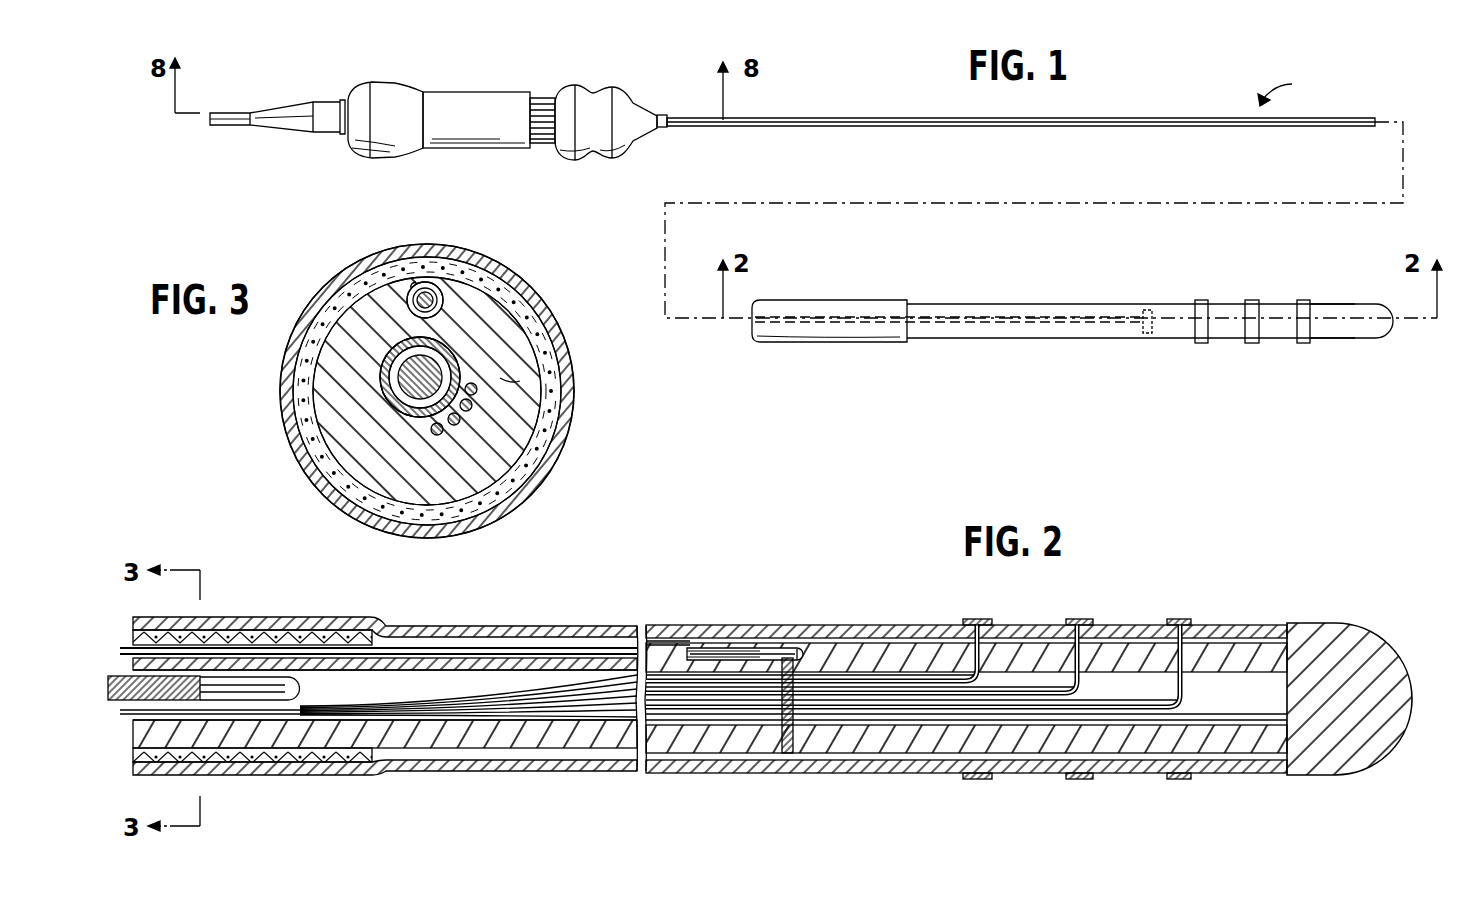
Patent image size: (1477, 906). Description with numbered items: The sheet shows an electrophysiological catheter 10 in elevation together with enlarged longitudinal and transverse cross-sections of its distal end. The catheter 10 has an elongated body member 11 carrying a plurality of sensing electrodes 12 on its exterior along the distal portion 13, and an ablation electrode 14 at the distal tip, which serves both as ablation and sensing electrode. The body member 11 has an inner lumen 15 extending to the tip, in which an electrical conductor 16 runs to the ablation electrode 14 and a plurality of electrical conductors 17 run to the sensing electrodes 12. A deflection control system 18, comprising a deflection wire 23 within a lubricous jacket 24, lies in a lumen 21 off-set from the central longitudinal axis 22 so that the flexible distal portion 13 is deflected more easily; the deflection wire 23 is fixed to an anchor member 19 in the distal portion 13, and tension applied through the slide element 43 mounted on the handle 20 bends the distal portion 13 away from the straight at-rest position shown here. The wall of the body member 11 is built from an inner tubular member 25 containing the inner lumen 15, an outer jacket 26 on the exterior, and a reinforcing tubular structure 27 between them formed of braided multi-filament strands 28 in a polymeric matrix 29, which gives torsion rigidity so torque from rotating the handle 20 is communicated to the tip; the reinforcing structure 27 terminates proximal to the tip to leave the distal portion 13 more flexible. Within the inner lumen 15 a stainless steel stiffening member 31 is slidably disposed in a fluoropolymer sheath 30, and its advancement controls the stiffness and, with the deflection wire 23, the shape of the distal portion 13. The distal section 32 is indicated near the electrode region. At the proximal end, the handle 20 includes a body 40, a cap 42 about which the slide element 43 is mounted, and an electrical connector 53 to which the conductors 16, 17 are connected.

In FIG. 1, the catheter 10 is at (1289, 86).
In FIG. 1, the body member 11 is at (1148, 128).
In FIG. 1, the sensing electrodes 12 is at (1303, 300).
In FIG. 2, the sensing electrodes 12 is at (981, 620).
In FIG. 1, the distal portion 13 is at (1266, 340).
In FIG. 2, the distal portion 13 is at (700, 782).
In FIG. 1, the ablation electrode 14 is at (1368, 340).
In FIG. 2, the ablation electrode 14 is at (1356, 766).
In FIG. 3, the inner lumen 15 is at (462, 364).
In FIG. 2, the inner lumen 15 is at (403, 683).
In FIG. 3, the electrical conductor 16 is at (506, 381).
In FIG. 2, the electrical conductor 16 is at (1214, 722).
In FIG. 3, the electrical conductors 17 is at (444, 428).
In FIG. 2, the electrical conductors 17 is at (1069, 690).
In FIG. 3, the deflection control system 18 is at (429, 296).
In FIG. 2, the deflection control system 18 is at (608, 652).
In FIG. 1, the anchor member 19 is at (1143, 308).
In FIG. 2, the anchor member 19 is at (817, 672).
In FIG. 1, the handle 20 is at (437, 70).
In FIG. 3, the lumen 21 is at (420, 283).
In FIG. 2, the lumen 21 is at (516, 648).
In FIG. 1, the central longitudinal axis 22 is at (712, 320).
In FIG. 2, the central longitudinal axis 22 is at (333, 627).
In FIG. 3, the deflection wire 23 is at (410, 290).
In FIG. 2, the deflection wire 23 is at (746, 648).
In FIG. 3, the jacket 24 is at (446, 298).
In FIG. 2, the jacket 24 is at (727, 648).
In FIG. 3, the inner tubular member 25 is at (467, 482).
In FIG. 2, the inner tubular member 25 is at (557, 743).
In FIG. 3, the outer jacket 26 is at (546, 462).
In FIG. 2, the outer jacket 26 is at (777, 773).
In FIG. 3, the reinforcing tubular structure 27 is at (306, 425).
In FIG. 2, the reinforcing tubular structure 27 is at (372, 770).
In FIG. 3, the multi-filament strands 28 is at (332, 476).
In FIG. 3, the polymeric matrix 29 is at (362, 497).
In FIG. 3, the sheath 30 is at (382, 382).
In FIG. 3, the stiffening member 31 is at (432, 368).
In FIG. 2, the stiffening member 31 is at (253, 700).
In FIG. 1, the distal section 32 is at (1330, 340).
In FIG. 2, the distal section 32 is at (893, 625).
In FIG. 1, the body 40 is at (478, 103).
In FIG. 1, the cap 42 is at (645, 108).
In FIG. 1, the slide element 43 is at (580, 90).
In FIG. 1, the electrical connector 53 is at (306, 105).